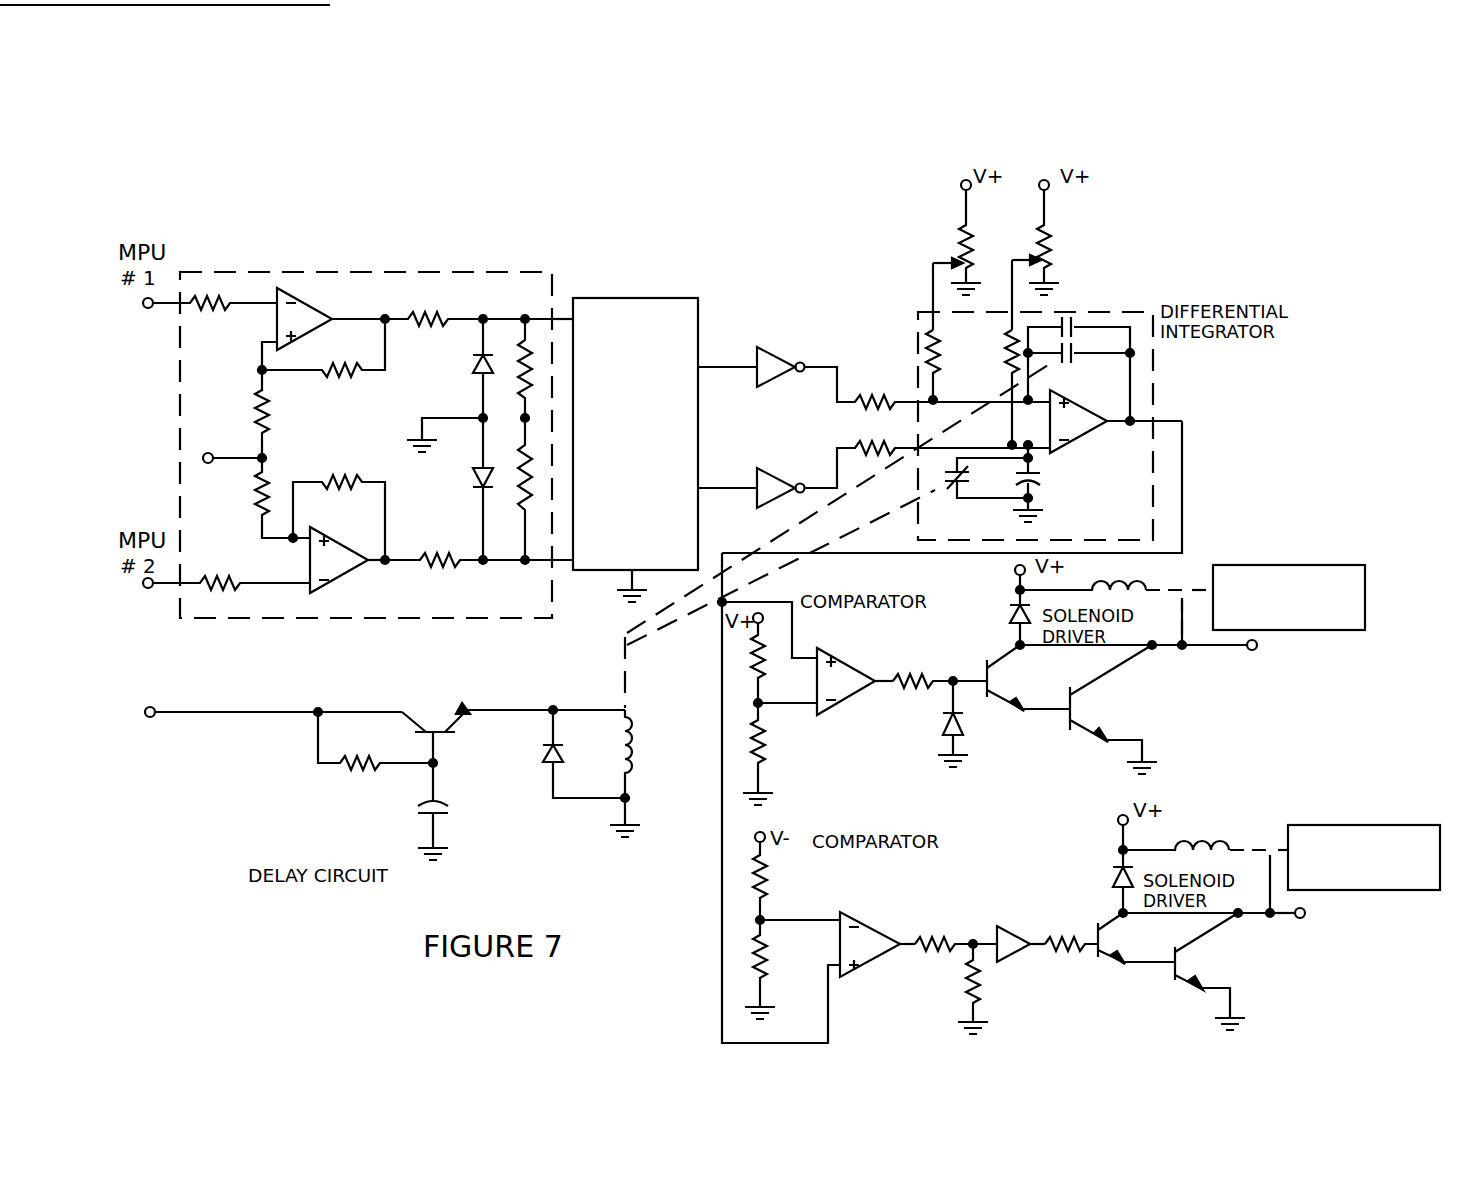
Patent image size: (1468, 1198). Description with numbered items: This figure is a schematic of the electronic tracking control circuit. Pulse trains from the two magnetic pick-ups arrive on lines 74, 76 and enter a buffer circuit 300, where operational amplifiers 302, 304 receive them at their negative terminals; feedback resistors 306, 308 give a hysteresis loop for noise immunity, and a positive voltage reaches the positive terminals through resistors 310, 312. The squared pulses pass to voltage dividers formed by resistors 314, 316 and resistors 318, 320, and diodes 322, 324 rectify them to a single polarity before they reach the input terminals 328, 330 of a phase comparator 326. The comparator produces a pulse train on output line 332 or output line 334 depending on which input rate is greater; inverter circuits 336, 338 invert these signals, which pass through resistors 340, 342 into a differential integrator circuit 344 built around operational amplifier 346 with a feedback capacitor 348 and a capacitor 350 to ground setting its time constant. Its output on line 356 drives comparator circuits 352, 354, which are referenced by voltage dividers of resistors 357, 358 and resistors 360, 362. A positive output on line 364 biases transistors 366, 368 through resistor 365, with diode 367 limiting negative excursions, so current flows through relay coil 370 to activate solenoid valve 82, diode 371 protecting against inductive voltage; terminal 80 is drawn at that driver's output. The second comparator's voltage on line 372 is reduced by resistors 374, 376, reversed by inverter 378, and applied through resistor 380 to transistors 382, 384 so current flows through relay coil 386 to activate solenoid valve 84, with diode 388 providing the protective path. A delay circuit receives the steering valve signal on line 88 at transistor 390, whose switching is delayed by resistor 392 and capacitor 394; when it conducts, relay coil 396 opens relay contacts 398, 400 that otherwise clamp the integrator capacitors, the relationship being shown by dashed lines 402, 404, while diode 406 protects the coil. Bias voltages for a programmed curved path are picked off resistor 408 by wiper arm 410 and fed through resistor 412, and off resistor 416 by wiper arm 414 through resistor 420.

The line 74 is at (158, 306).
The line 76 is at (158, 588).
The output terminal 80 is at (1210, 650).
The solenoid valve 82 is at (1280, 565).
The solenoid valve 84 is at (1335, 825).
The line 88 is at (170, 710).
The buffer circuit 300 is at (520, 270).
The operational amplifier 302 is at (306, 308).
The operational amplifier 304 is at (340, 583).
The resistor 306 is at (338, 364).
The resistor 308 is at (330, 478).
The resistor 310 is at (258, 404).
The resistor 312 is at (258, 486).
The resistor 314 is at (428, 316).
The resistor 316 is at (530, 372).
The resistor 318 is at (455, 563).
The resistor 320 is at (520, 498).
The diode 322 is at (476, 355).
The diode 324 is at (476, 484).
The phase comparator 326 is at (648, 297).
The input terminal 328 is at (560, 318).
The input terminal 330 is at (562, 572).
The output line 332 is at (724, 365).
The output line 334 is at (728, 486).
The inverter circuit 336 is at (760, 342).
The inverter circuit 338 is at (780, 480).
The resistor 340 is at (884, 394).
The resistor 342 is at (860, 440).
The differential integrator circuit 344 is at (1155, 398).
The operational amplifier 346 is at (1080, 440).
The capacitor 348 is at (1078, 318).
The capacitor 350 is at (1046, 480).
The comparator circuit 352 is at (842, 658).
The comparator circuit 354 is at (875, 904).
The line 356 is at (1183, 520).
The resistor 357 is at (748, 656).
The resistor 358 is at (765, 745).
The resistor 360 is at (768, 882).
The resistor 362 is at (768, 940).
The line 364 is at (882, 686).
The resistor 365 is at (918, 676).
The transistor 366 is at (994, 676).
The diode 367 is at (966, 722).
The transistor 368 is at (1078, 703).
The relay coil 370 is at (1126, 584).
The diode 371 is at (1010, 612).
The line 372 is at (900, 950).
The resistor 374 is at (935, 936).
The resistor 376 is at (965, 994).
The inverter 378 is at (1040, 918).
The resistor 380 is at (1072, 952).
The transistor 382 is at (1104, 942).
The transistor 384 is at (1185, 962).
The relay coil 386 is at (1226, 846).
The diode 388 is at (1112, 874).
The transistor 390 is at (436, 722).
The resistor 392 is at (368, 776).
The capacitor 394 is at (444, 798).
The relay coil 396 is at (632, 720).
The relay contacts 398 is at (1076, 362).
The relay contacts 400 is at (955, 490).
The dashed line 402 is at (772, 536).
The dashed line 404 is at (762, 580).
The diode 406 is at (544, 742).
The resistor 408 is at (958, 236).
The wiper arm 410 is at (932, 258).
The resistor 412 is at (930, 335).
The wiper arm 414 is at (1020, 258).
The resistor 416 is at (1050, 238).
The resistor 420 is at (1008, 338).